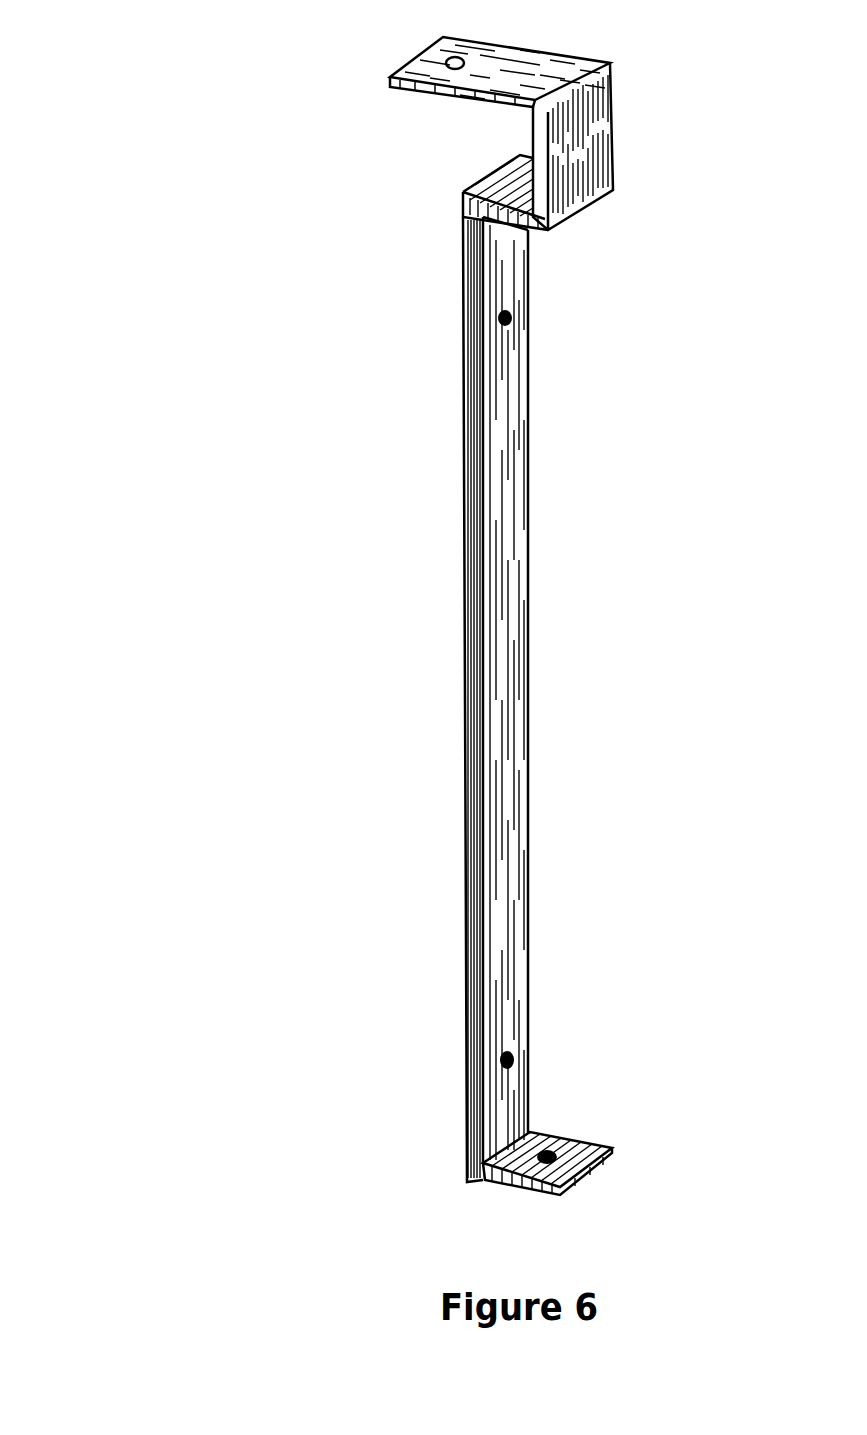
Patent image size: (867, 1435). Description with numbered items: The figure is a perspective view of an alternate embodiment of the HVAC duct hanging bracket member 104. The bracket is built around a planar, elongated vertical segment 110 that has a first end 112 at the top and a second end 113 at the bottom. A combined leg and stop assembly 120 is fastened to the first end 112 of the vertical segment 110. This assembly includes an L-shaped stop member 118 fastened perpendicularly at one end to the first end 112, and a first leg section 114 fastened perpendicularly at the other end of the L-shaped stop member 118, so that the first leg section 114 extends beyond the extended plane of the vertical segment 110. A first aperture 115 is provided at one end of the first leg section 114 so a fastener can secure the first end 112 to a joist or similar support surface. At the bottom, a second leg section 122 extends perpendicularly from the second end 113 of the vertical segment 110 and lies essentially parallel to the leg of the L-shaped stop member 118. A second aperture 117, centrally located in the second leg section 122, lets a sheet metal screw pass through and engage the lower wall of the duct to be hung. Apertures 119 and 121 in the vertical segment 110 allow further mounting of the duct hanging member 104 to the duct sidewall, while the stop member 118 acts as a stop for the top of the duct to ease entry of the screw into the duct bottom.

The HVAC duct hanging bracket member 104 is at (200, 789).
The elongated vertical segment 110 is at (503, 732).
The first end 112 is at (508, 282).
The second end 113 is at (505, 1118).
The first leg section 114 is at (543, 72).
The first aperture 115 is at (456, 70).
The second aperture 117 is at (575, 1143).
The L-shaped stop member 118 is at (580, 212).
The aperture 119 is at (512, 318).
The combined leg and stop assembly 120 is at (252, 138).
The aperture 121 is at (514, 1058).
The second leg section 122 is at (510, 1162).